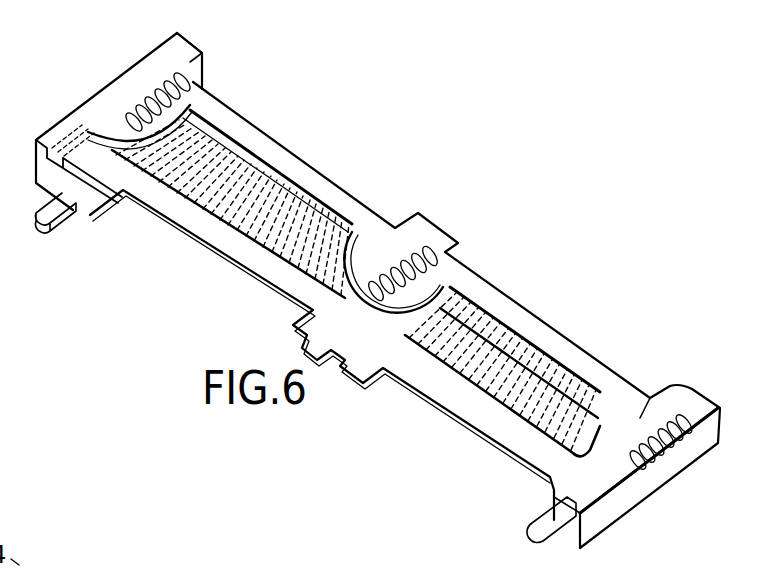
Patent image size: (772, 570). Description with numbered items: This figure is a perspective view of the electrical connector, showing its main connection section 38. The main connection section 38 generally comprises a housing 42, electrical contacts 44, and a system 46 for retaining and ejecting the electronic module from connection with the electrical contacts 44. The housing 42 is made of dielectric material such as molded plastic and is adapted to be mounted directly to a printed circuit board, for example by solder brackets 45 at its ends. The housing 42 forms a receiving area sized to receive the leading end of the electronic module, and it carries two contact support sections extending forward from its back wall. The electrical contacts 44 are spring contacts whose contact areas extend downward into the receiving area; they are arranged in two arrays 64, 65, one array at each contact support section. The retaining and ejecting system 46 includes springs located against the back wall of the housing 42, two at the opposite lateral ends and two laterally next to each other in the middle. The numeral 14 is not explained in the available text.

The connector housing 14 is at (95, 100).
The main connection section 38 is at (171, 44).
The housing 42 is at (560, 347).
The electrical contacts 44 is at (252, 130).
The solder brackets 45 is at (625, 517).
The system for retaining and ejecting the electronic module 46 is at (152, 66).
The first array of electrical contacts 64 is at (350, 193).
The second array of electrical contacts 65 is at (514, 312).